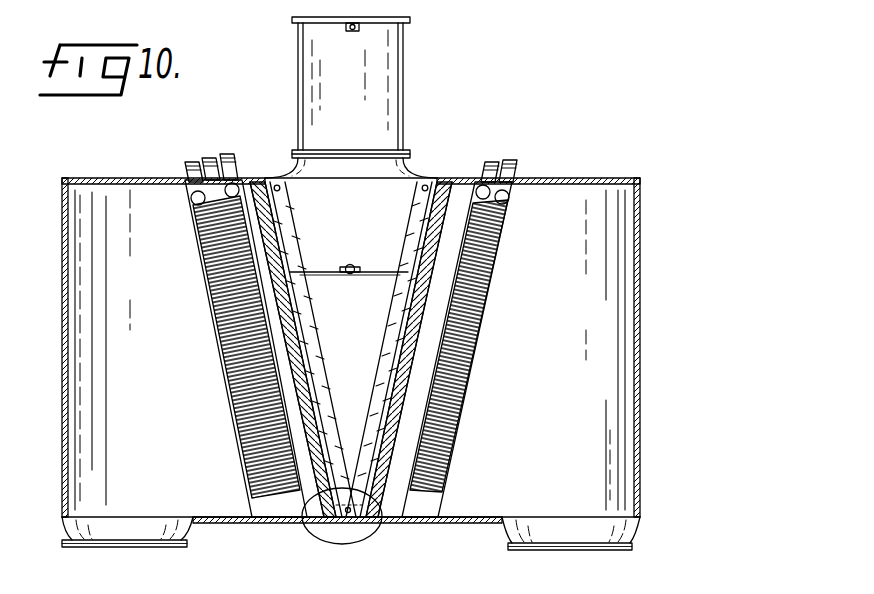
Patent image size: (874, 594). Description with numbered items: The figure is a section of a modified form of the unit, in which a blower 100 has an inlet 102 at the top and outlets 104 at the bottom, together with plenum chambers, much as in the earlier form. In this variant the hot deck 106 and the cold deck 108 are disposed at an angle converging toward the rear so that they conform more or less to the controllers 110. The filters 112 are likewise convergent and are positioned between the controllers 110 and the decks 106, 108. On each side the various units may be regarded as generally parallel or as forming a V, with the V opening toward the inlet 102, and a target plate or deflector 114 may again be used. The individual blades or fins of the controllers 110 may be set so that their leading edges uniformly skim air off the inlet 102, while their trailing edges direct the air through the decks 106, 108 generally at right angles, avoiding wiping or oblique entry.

The blower 100 is at (312, 75).
The inlet 102 is at (407, 166).
The outlets 104 is at (129, 548).
The hot deck 106 is at (460, 374).
The cold deck 108 is at (236, 350).
The controllers 110 is at (377, 353).
The filters 112 is at (342, 525).
The target plate or deflector 114 is at (342, 267).